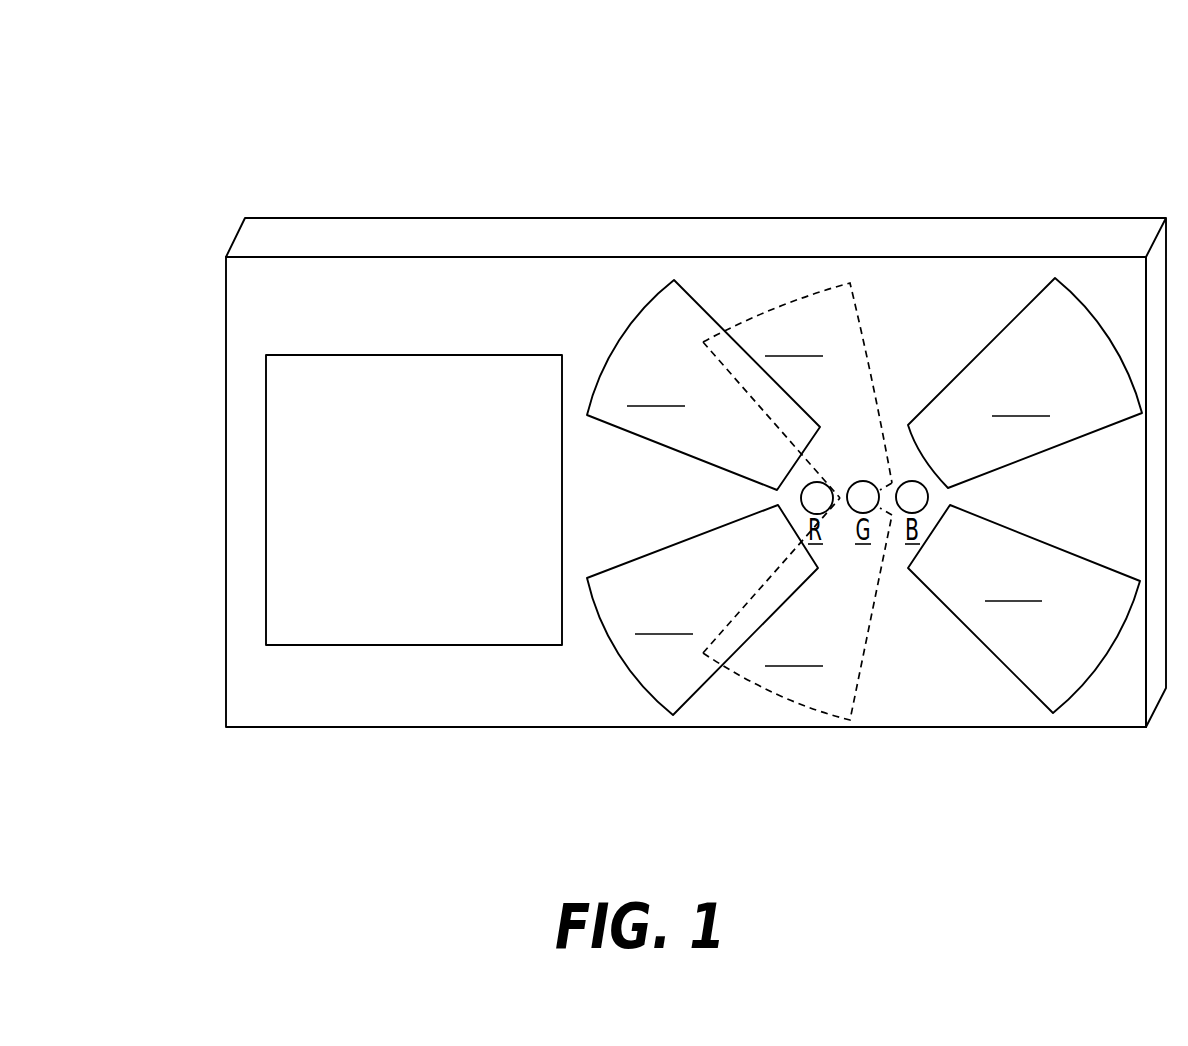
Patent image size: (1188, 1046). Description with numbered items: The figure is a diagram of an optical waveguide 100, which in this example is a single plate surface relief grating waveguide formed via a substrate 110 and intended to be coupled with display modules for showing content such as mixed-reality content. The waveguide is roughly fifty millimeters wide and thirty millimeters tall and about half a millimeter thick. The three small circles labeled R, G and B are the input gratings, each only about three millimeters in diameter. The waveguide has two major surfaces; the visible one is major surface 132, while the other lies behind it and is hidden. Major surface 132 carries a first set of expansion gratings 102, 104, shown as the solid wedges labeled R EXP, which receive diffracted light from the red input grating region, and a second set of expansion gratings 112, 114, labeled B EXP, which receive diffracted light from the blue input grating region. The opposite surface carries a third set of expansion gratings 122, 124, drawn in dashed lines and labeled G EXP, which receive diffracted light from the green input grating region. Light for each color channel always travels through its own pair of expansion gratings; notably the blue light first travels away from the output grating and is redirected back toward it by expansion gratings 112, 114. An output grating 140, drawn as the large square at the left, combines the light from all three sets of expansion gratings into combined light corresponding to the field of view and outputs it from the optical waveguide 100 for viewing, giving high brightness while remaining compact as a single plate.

The optical waveguide 100 is at (212, 152).
The expansion grating 102 is at (627, 333).
The expansion grating 104 is at (630, 558).
The substrate 110 is at (1101, 291).
The expansion grating 112 is at (1068, 445).
The expansion grating 114 is at (977, 640).
The expansion grating 122 is at (852, 293).
The expansion grating 124 is at (872, 615).
The major surface 132 is at (248, 303).
The output grating 140 is at (396, 511).